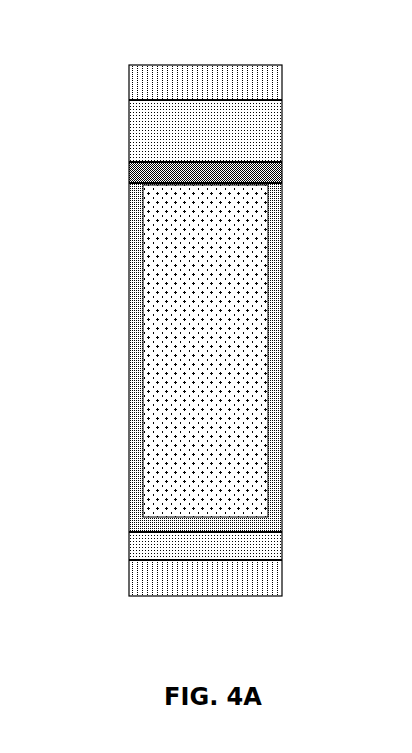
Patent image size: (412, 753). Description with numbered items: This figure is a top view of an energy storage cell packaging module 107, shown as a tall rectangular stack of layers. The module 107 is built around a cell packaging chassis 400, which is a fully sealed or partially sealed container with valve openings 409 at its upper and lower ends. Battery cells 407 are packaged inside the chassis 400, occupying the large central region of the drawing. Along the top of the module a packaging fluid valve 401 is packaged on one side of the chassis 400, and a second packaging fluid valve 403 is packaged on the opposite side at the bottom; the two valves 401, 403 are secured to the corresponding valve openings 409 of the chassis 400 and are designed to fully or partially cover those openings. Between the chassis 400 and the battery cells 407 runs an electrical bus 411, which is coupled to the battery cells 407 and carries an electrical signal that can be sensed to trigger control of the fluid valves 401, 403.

The energy storage cell packaging module 107 is at (288, 83).
The cell packaging chassis 400 is at (128, 132).
The packaging fluid valve 401 is at (182, 87).
The packaging fluid valve 403 is at (226, 580).
The battery cells 407 is at (235, 372).
The valve openings 409 is at (128, 100).
The electrical bus 411 is at (284, 172).